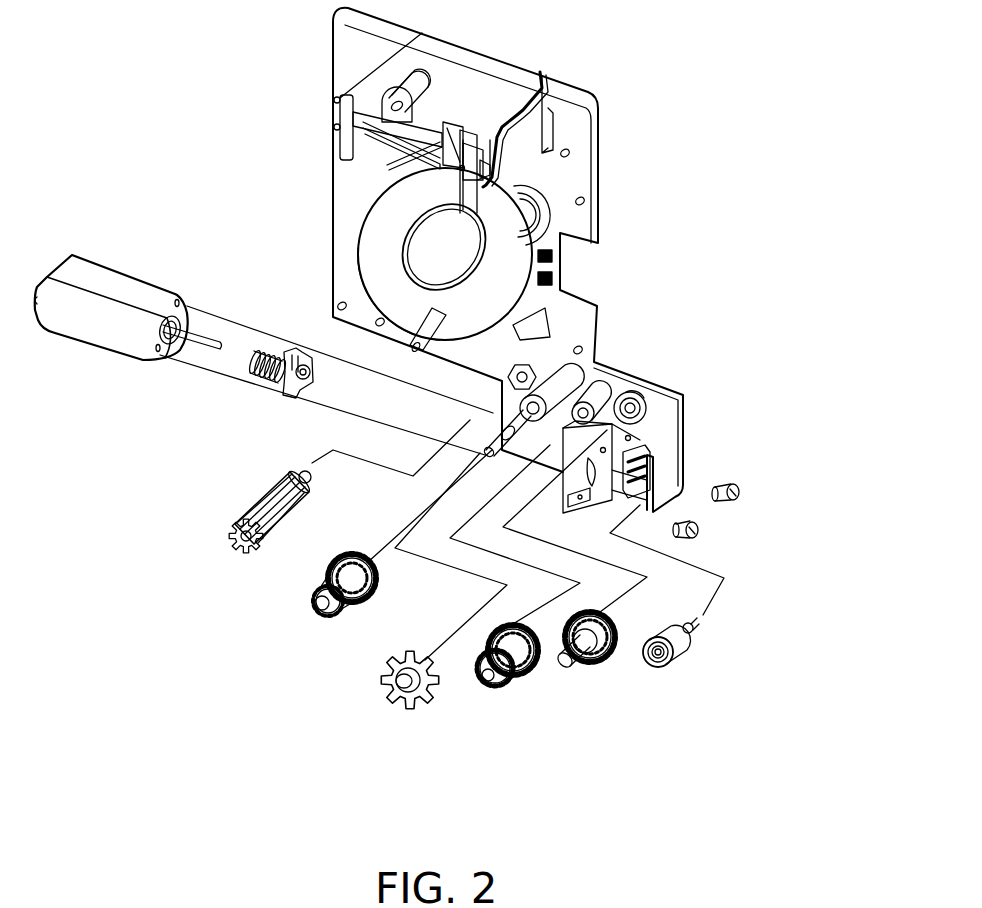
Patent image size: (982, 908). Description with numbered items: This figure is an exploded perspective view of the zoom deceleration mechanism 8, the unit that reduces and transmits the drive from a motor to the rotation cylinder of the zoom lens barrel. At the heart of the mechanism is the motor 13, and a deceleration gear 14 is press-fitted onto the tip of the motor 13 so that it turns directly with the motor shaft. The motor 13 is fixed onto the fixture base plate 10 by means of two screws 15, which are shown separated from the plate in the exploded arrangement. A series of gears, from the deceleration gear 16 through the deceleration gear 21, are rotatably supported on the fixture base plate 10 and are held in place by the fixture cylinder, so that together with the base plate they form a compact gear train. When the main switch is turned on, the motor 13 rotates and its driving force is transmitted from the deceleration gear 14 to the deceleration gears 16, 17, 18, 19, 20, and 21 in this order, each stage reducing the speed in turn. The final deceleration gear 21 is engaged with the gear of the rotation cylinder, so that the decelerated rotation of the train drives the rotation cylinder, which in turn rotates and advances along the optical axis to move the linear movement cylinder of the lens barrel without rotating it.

The zoom deceleration mechanism 8 is at (172, 695).
The fixture base plate 10 is at (600, 230).
The motor 13 is at (157, 287).
The deceleration gear 14 is at (265, 377).
The screw 15 is at (727, 487).
The deceleration gear 16 is at (657, 672).
The deceleration gear 17 is at (580, 667).
The deceleration gear 18 is at (490, 693).
The deceleration gear 19 is at (393, 703).
The deceleration gear 20 is at (323, 612).
The deceleration gear 21 is at (240, 545).